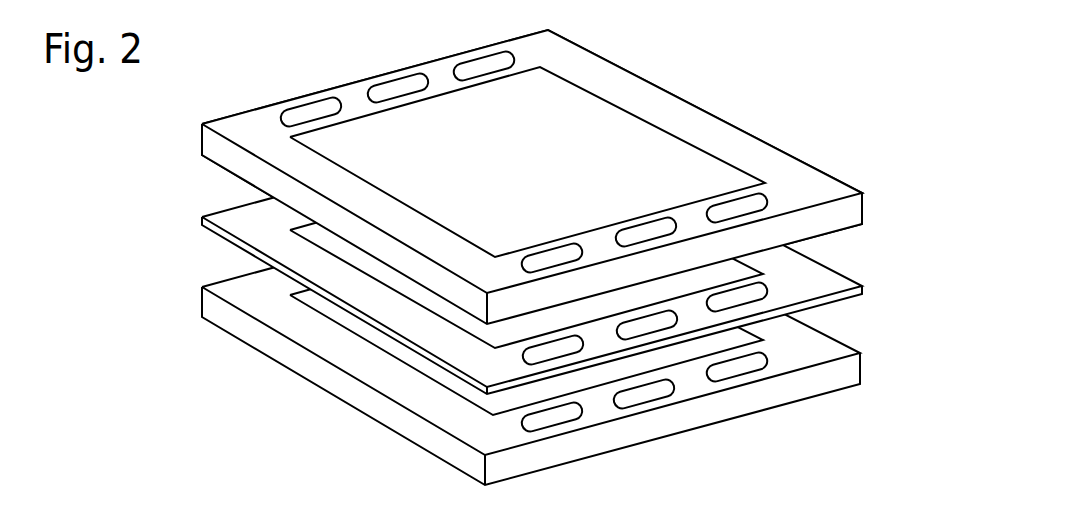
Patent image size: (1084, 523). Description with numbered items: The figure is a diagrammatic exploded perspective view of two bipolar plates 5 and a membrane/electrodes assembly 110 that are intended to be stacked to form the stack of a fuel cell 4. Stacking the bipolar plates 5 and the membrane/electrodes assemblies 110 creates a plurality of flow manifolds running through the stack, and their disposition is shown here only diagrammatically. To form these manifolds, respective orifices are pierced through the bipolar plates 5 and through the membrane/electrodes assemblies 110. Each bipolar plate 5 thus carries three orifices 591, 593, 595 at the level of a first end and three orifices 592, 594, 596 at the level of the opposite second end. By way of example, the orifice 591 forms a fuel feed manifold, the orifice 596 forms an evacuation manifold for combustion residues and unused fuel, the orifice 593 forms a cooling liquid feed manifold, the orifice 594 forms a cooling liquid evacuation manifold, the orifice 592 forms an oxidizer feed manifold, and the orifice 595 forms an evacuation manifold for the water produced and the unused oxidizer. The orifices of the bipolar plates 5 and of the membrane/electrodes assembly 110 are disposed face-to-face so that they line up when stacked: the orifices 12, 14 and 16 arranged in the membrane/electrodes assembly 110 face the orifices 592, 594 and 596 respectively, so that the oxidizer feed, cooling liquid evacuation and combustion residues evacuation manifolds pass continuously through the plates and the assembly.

The fuel cell 4 is at (572, 257).
The bipolar plate 5 is at (838, 208).
The orifice 12 is at (522, 358).
The orifice 14 is at (612, 318).
The orifice 16 is at (866, 287).
The membrane/electrodes assembly 110 is at (868, 291).
The orifice 591 is at (483, 53).
The orifice 592 is at (550, 248).
The orifice 593 is at (392, 77).
The orifice 594 is at (642, 223).
The orifice 595 is at (307, 100).
The orifice 596 is at (838, 183).